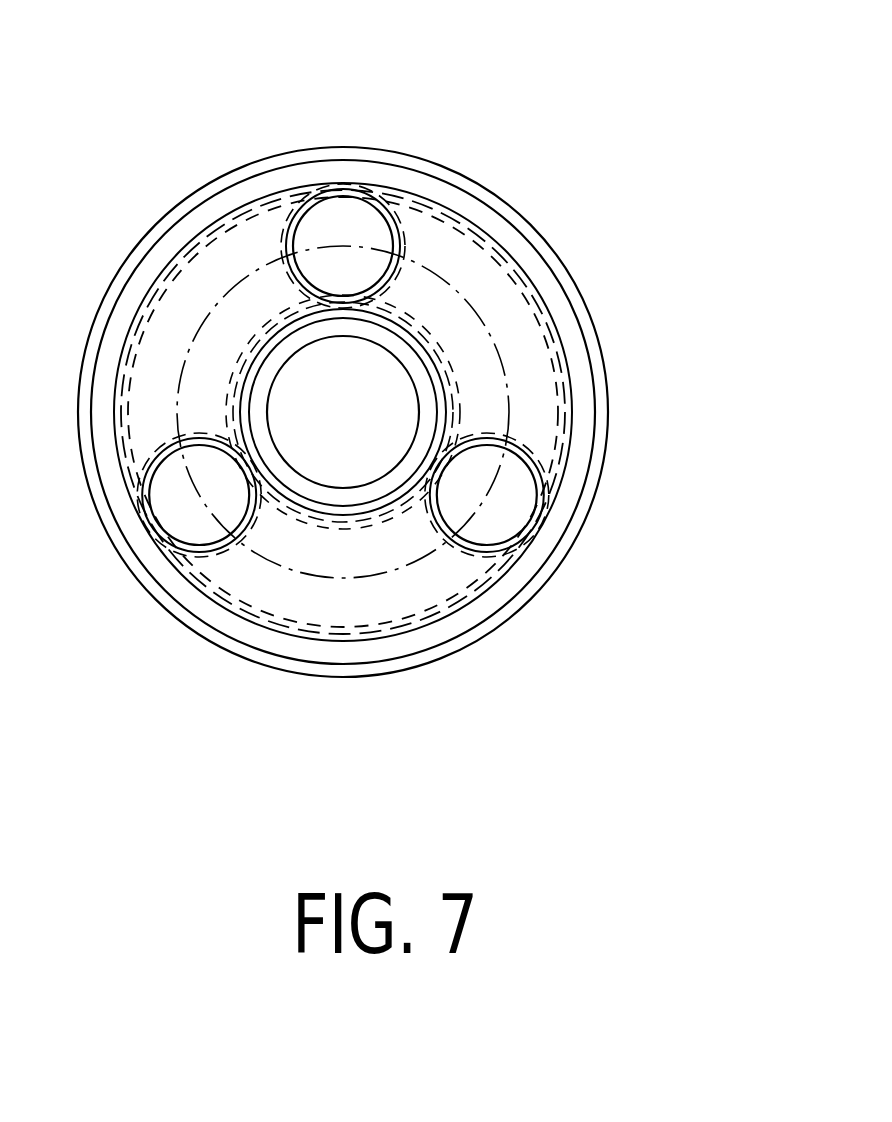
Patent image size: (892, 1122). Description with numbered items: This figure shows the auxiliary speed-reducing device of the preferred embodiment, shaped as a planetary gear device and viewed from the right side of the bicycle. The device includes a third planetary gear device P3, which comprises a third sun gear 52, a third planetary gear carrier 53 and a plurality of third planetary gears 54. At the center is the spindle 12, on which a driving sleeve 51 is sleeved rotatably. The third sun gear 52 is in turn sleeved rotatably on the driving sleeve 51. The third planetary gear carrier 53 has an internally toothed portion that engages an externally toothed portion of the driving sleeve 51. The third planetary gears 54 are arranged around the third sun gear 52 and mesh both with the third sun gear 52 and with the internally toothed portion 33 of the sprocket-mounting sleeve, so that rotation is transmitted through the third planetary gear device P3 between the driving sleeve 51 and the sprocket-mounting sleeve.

The spindle 12 is at (252, 530).
The internally toothed portion 33 is at (557, 337).
The driving sleeve 51 is at (434, 339).
The third sun gear 52 is at (507, 575).
The third planetary gear carrier 53 is at (427, 185).
The third planetary gears 54 is at (382, 153).
The third planetary gear device P3 is at (603, 529).